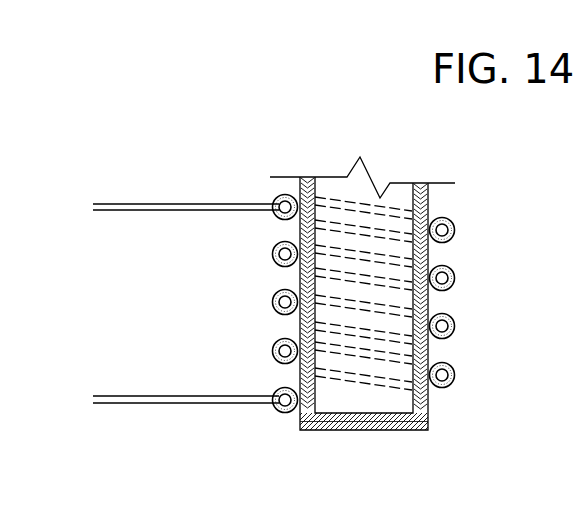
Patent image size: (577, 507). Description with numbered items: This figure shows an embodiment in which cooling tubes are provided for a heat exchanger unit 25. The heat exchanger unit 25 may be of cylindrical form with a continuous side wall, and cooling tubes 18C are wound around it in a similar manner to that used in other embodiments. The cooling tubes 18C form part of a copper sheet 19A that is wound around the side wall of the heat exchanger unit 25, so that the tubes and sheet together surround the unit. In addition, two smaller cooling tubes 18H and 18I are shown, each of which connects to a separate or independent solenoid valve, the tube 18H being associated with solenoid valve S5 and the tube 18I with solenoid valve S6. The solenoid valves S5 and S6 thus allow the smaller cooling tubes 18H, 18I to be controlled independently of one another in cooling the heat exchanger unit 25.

The cooling tube 18H is at (168, 209).
The cooling tube 18I is at (168, 400).
The cooling tubes 18C is at (455, 227).
The copper sheet 19A is at (428, 305).
The heat exchanger unit 25 is at (388, 431).
The solenoid valve S5 is at (66, 215).
The solenoid valve S6 is at (66, 413).